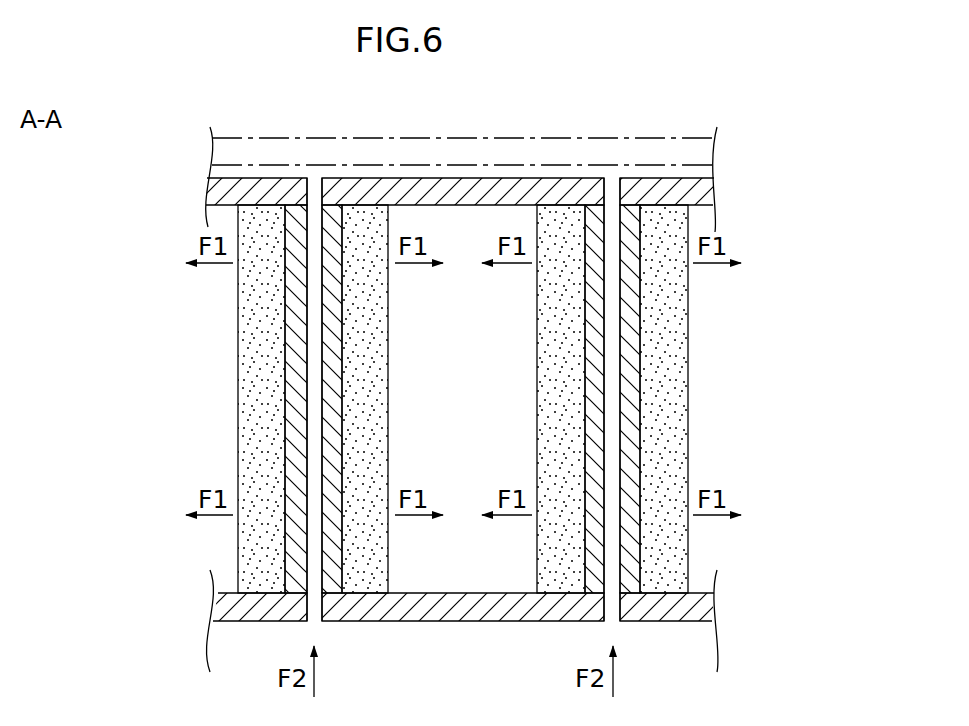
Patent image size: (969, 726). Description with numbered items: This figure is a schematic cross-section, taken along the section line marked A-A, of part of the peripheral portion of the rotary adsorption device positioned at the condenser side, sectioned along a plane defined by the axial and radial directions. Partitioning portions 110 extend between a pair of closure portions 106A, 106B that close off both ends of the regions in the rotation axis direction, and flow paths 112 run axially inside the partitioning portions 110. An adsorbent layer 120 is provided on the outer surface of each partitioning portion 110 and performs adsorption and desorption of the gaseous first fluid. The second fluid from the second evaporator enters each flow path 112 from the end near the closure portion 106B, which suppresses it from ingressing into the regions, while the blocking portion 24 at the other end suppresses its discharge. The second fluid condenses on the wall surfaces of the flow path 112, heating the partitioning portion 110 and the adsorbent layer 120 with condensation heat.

The blocking portion 24 is at (297, 150).
The closure portion 106A is at (452, 196).
The closure portion 106B is at (465, 607).
The partitioning portion 110 is at (297, 343).
The adsorbent layer 120 is at (263, 424).
The flow path 112 is at (315, 553).